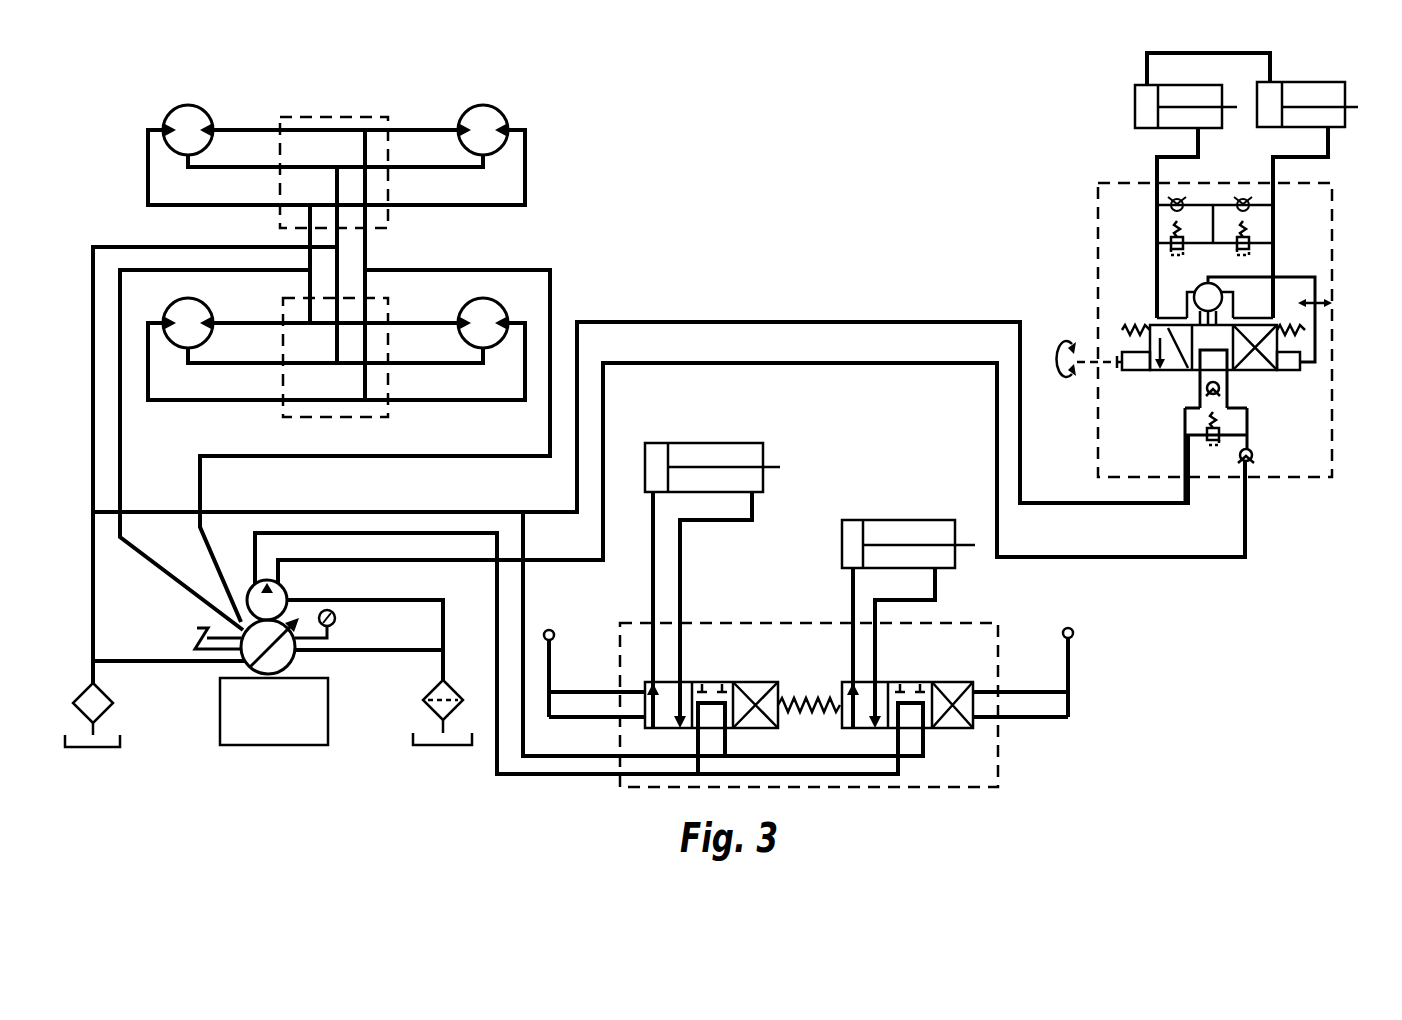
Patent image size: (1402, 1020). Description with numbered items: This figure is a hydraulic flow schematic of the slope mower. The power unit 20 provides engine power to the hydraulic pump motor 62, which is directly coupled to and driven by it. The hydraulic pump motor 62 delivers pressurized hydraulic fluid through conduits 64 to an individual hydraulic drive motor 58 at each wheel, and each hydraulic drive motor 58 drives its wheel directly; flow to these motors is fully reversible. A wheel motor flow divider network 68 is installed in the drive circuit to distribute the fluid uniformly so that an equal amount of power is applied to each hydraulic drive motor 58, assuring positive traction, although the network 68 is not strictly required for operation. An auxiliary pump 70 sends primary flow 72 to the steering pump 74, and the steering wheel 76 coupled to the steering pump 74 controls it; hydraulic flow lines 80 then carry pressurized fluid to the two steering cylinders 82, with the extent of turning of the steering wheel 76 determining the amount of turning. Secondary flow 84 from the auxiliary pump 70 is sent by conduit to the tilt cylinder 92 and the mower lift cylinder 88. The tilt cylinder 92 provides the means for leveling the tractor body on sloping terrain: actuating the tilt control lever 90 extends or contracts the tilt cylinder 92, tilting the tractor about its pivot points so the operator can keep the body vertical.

The power unit 20 is at (262, 746).
The hydraulic drive motor 58 is at (186, 104).
The hydraulic pump motor 62 is at (240, 661).
The conduits 64 is at (93, 412).
The wheel motor flow divider network 68 is at (352, 116).
The auxiliary pump 70 is at (288, 594).
The primary flow 72 is at (473, 562).
The steering pump 74 is at (1332, 246).
The steering wheel 76 is at (1062, 342).
The hydraulic flow lines 80 is at (1201, 143).
The steering cylinders 82 is at (1187, 85).
The secondary flow 84 is at (495, 640).
The mower lift cylinder 88 is at (842, 556).
The tilt control lever 90 is at (553, 656).
The tilt cylinder 92 is at (752, 443).